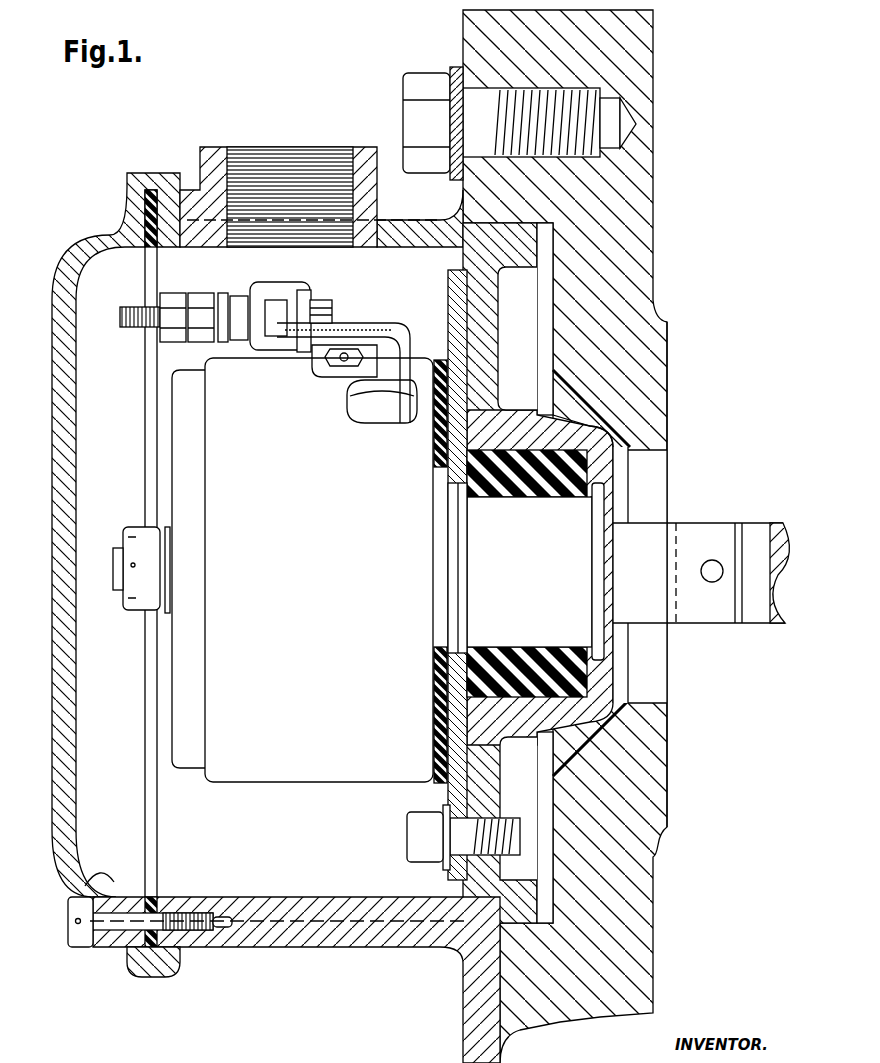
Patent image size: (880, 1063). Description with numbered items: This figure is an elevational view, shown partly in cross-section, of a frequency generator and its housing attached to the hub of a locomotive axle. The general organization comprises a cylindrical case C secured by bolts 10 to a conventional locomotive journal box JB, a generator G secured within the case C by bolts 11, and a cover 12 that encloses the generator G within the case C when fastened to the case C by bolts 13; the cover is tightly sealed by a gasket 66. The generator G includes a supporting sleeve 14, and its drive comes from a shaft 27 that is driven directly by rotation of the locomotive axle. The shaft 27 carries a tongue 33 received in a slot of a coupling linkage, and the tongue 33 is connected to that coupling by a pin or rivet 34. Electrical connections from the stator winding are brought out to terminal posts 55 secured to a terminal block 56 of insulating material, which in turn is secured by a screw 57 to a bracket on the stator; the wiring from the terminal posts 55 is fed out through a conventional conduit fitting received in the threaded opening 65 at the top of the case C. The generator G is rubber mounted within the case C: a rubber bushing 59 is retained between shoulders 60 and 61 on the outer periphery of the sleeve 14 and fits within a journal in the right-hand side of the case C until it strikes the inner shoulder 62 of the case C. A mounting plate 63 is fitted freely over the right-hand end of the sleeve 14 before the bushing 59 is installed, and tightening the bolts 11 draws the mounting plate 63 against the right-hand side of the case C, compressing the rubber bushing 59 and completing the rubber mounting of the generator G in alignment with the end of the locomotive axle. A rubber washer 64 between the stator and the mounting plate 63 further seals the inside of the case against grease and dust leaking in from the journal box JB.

The bolts 10 is at (406, 88).
The bolts 11 is at (407, 832).
The cover 12 is at (90, 240).
The bolts 13 is at (77, 946).
The supporting sleeve 14 is at (583, 635).
The shaft 27 is at (752, 523).
The tongue 33 is at (676, 566).
The pin or rivet 34 is at (712, 582).
The terminal posts 55 is at (132, 322).
The terminal block 56 is at (282, 292).
The screw 57 is at (330, 316).
The rubber bushing 59 is at (527, 493).
The shoulder 60 is at (465, 612).
The shoulder 61 is at (592, 577).
The inner shoulder 62 is at (585, 461).
The mounting plate 63 is at (448, 296).
The rubber washer 64 is at (436, 372).
The threaded opening 65 is at (236, 145).
The gasket 66 is at (152, 960).
The journal box JB is at (653, 200).
The cylindrical case C is at (372, 940).
The generator G is at (228, 778).